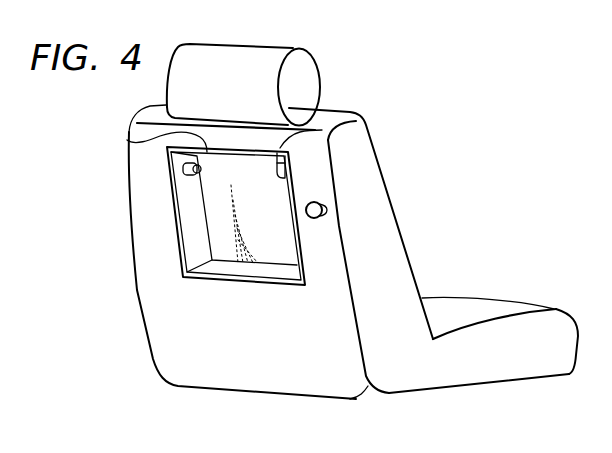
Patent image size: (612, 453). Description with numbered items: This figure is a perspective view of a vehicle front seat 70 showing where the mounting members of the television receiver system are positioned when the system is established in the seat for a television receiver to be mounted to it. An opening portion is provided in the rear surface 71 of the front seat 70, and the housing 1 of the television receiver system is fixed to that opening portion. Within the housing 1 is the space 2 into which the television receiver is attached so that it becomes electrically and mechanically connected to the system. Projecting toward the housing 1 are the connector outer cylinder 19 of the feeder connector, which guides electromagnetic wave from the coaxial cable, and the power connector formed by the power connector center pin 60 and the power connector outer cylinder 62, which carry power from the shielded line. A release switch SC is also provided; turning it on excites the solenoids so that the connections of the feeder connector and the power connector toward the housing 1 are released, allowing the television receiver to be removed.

The housing 1 is at (167, 168).
The recess 2 is at (222, 217).
The connector outer cylinder 19 is at (319, 128).
The power connector center pin 60 is at (128, 134).
The power connector outer cylinder 62 is at (192, 170).
The release switch SC is at (318, 219).
The front seat 70 is at (474, 378).
The rear surface 71 is at (275, 381).